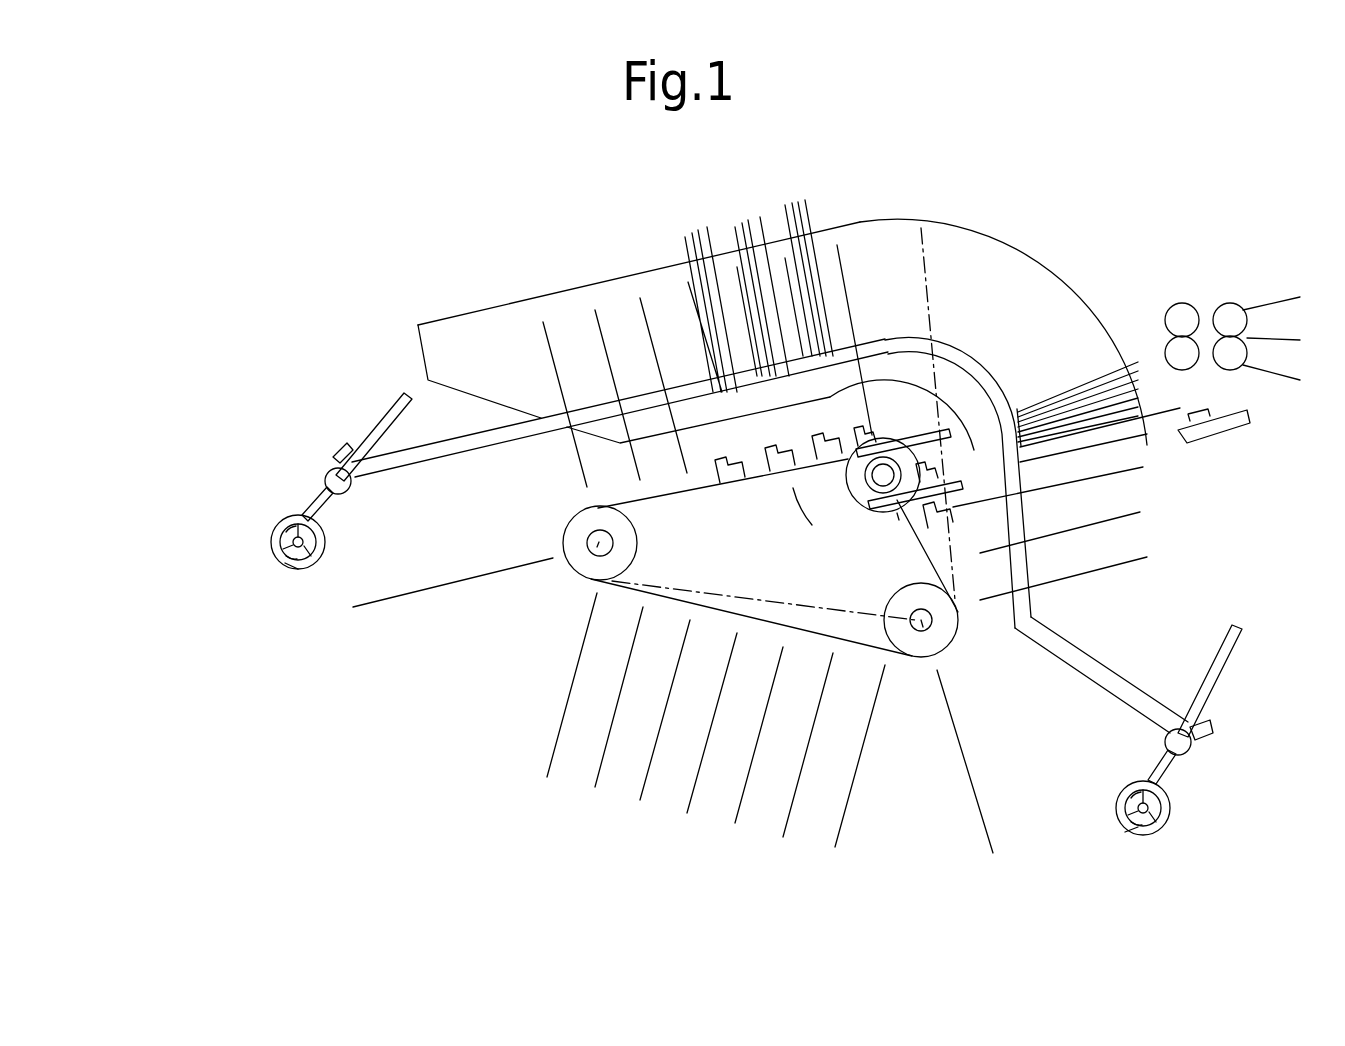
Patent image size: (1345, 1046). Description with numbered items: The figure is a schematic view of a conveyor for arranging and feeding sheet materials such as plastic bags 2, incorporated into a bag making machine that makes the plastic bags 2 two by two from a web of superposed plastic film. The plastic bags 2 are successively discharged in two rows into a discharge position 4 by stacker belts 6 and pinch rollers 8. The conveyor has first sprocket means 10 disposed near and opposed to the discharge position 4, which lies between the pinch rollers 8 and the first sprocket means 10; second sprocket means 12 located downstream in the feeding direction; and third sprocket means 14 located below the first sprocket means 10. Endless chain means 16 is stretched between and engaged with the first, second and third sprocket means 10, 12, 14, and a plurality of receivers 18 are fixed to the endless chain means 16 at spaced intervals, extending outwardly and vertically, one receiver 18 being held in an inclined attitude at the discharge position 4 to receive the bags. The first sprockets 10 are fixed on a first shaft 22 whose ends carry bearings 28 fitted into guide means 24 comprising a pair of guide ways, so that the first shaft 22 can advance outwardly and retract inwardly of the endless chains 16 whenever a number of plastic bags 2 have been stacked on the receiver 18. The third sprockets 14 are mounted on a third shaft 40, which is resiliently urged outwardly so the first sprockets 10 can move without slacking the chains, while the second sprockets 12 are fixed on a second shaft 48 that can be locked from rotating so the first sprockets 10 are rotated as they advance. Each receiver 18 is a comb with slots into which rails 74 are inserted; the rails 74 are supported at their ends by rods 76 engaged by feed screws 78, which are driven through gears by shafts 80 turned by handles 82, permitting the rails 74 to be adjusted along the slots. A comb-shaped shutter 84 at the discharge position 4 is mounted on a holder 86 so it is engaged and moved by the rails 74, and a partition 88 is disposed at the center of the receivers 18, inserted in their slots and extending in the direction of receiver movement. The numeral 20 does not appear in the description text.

The plastic bags 2 is at (780, 210).
The discharge position 4 is at (1107, 393).
The stacker belts 6 is at (1262, 302).
The pinch rollers 8 is at (1183, 315).
The first sprocket means 10 is at (850, 477).
The second sprocket means 12 is at (570, 533).
The third sprocket means 14 is at (950, 633).
The endless chain means 16 is at (680, 600).
The receivers 18 is at (640, 317).
The clamp 20 is at (858, 443).
The first shaft 22 is at (853, 480).
The guide means 24 is at (897, 513).
The bearings 28 is at (877, 510).
The third shaft 40 is at (923, 620).
The second shaft 48 is at (597, 547).
The rails 74 is at (977, 373).
The rods 76 is at (330, 477).
The feed screws 78 is at (382, 422).
The shafts 80 is at (273, 555).
The handles 82 is at (283, 570).
The shutter 84 is at (1092, 430).
The holder 86 is at (1237, 430).
The partition 88 is at (1045, 291).